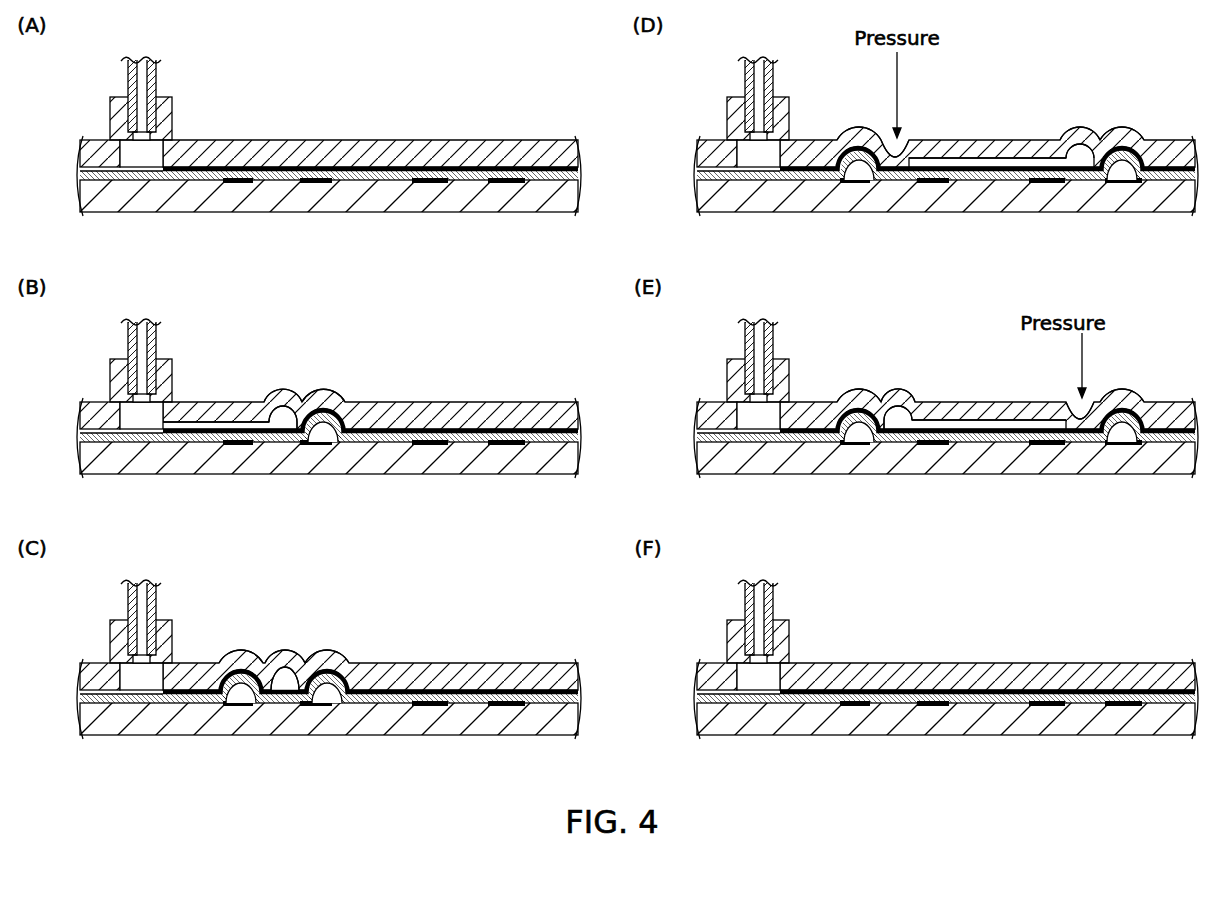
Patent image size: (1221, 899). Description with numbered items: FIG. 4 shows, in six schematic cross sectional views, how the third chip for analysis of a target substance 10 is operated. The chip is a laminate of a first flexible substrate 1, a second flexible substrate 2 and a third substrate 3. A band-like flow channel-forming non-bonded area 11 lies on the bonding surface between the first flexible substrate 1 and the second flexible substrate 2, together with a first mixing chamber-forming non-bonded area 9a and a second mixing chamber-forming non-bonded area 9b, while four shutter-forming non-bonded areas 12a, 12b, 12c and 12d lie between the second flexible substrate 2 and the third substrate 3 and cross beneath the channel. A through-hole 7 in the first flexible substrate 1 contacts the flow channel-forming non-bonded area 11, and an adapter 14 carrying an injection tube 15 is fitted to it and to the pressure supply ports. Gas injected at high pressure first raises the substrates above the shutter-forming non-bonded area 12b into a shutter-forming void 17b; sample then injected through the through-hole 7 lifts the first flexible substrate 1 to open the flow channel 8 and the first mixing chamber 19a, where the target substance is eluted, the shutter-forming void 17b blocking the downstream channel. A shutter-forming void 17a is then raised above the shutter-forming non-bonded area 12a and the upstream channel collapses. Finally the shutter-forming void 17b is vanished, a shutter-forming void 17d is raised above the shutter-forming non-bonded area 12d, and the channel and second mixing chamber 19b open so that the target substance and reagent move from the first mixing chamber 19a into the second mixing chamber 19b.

The first flexible substrate 1 is at (614, 408).
The second flexible substrate 2 is at (614, 439).
The third substrate 3 is at (614, 460).
The through-hole 7 is at (466, 396).
The flow channel 8 is at (628, 266).
The first mixing chamber-forming non-bonded area 9a is at (565, 395).
The second mixing chamber-forming non-bonded area 9b is at (817, 395).
The chip for analysis of a target substance 10 is at (614, 394).
The flow channel-forming non-bonded area 11 is at (703, 395).
The shutter-forming non-bonded area 12a is at (551, 480).
The shutter-forming non-bonded area 12b is at (625, 480).
The shutter-forming non-bonded area 12c is at (738, 480).
The shutter-forming non-bonded area 12d is at (816, 480).
The adapter 14 is at (440, 360).
The injection tube 15 is at (468, 356).
The shutter-forming void 17a is at (547, 395).
The shutter-forming void 17b is at (344, 523).
The shutter-forming void 17d is at (1135, 264).
The first mixing chamber 19a is at (581, 373).
The second mixing chamber 19b is at (1067, 252).